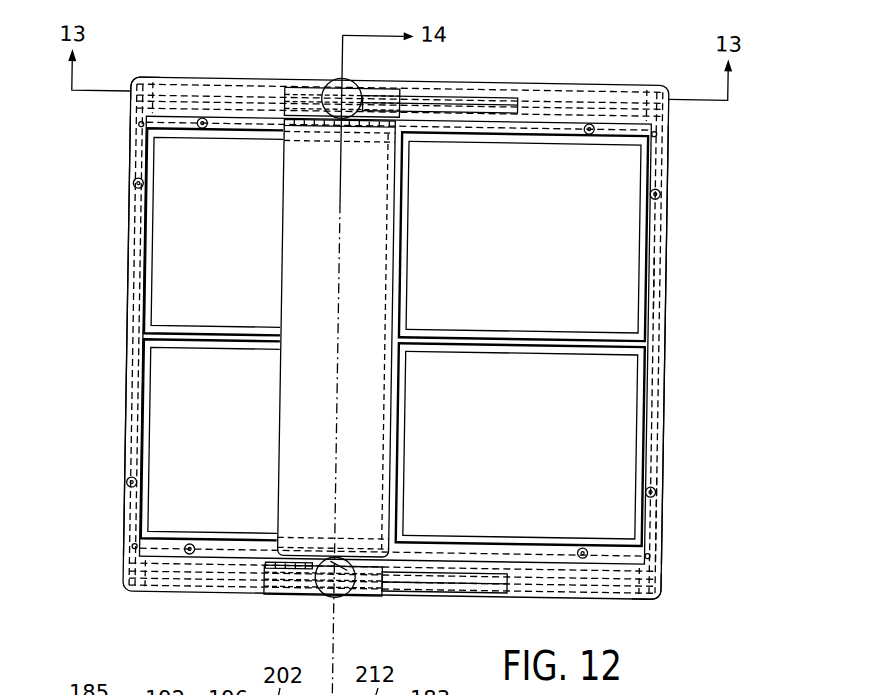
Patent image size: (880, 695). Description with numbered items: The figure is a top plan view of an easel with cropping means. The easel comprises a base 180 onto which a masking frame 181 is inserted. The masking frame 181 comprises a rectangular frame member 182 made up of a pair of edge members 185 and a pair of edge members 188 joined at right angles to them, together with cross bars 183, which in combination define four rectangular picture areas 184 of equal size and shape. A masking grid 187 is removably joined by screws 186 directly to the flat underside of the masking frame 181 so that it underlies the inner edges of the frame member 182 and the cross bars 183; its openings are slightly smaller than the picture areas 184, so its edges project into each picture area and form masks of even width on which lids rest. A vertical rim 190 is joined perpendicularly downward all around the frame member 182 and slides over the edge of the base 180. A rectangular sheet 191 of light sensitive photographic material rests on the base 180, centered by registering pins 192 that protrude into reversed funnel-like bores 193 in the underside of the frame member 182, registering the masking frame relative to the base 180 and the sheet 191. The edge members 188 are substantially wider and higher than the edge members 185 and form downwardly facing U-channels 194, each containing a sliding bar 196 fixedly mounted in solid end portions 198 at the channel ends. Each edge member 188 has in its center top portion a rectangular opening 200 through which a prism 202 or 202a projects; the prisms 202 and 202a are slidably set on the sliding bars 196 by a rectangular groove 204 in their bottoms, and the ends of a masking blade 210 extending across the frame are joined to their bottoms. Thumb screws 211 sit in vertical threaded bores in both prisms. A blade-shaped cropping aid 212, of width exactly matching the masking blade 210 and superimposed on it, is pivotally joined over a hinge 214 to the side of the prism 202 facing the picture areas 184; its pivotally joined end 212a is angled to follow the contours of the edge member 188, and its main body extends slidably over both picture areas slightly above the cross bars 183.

The base 180 is at (128, 370).
The masking frame 181 is at (697, 225).
The rectangular frame member 182 is at (676, 384).
The cross bars 183 is at (408, 240).
The picture areas 184 is at (183, 266).
The edge members 185 is at (132, 325).
The screws 186 is at (410, 322).
The masking grid 187 is at (615, 150).
The edge members 188 is at (590, 83).
The vertical rim 190 is at (127, 464).
The rectangular sheet 191 is at (656, 283).
The registering pins 192 is at (124, 494).
The reversed funnel-like bores 193 is at (672, 508).
The U-channels 194 is at (182, 86).
The sliding bar 196 is at (504, 90).
The solid end portions 198 is at (146, 86).
The rectangular opening 200 is at (515, 90).
The prism 202 is at (296, 85).
The prism 202a is at (368, 593).
The rectangular groove 204 is at (291, 584).
The masking blade 210 is at (284, 208).
The thumb screws 211 is at (355, 80).
The cropping aid 212 is at (296, 408).
The pivotally joined end 212a is at (300, 126).
The hinge 214 is at (386, 128).